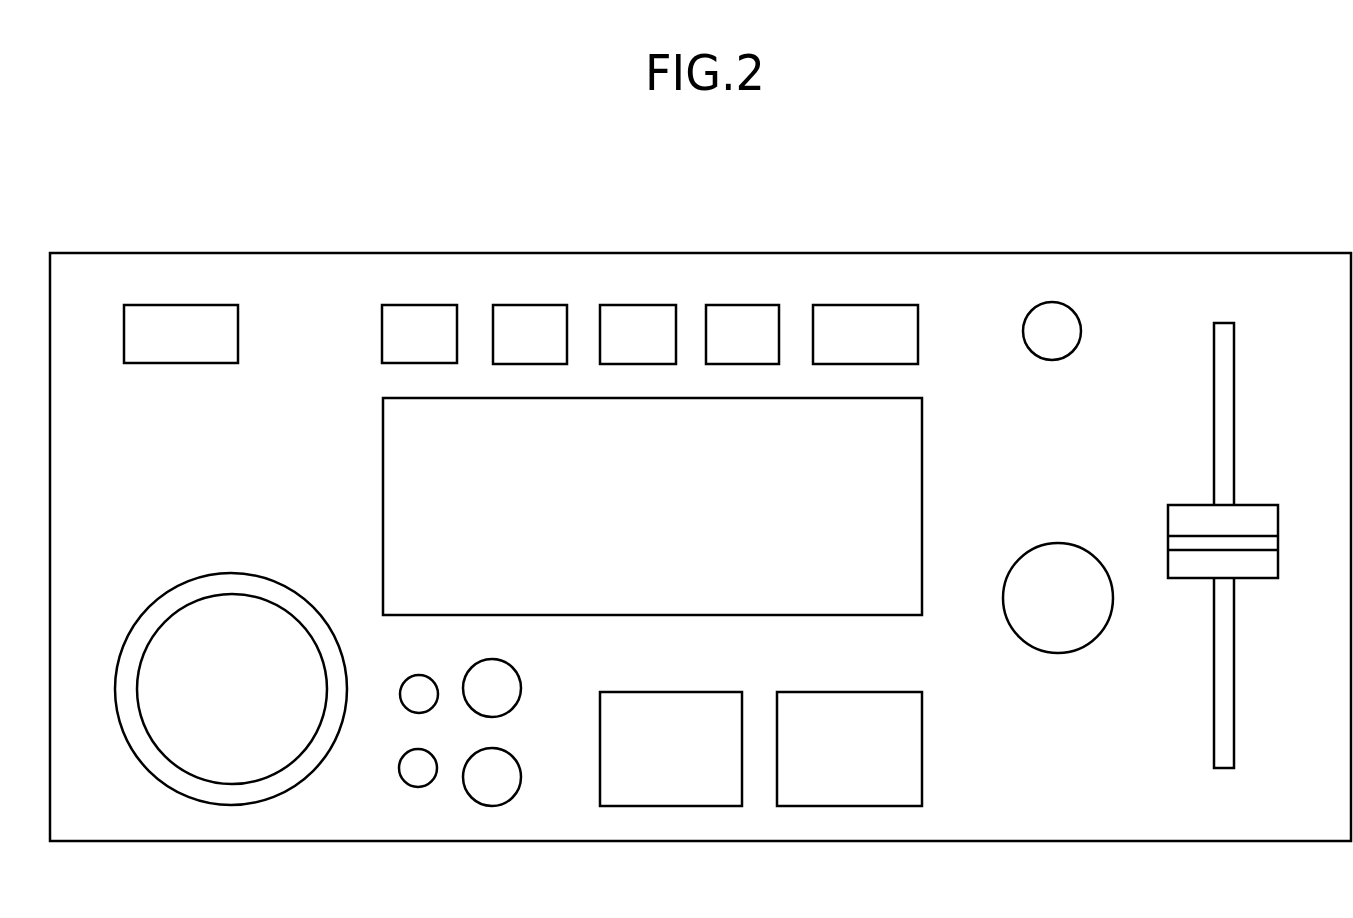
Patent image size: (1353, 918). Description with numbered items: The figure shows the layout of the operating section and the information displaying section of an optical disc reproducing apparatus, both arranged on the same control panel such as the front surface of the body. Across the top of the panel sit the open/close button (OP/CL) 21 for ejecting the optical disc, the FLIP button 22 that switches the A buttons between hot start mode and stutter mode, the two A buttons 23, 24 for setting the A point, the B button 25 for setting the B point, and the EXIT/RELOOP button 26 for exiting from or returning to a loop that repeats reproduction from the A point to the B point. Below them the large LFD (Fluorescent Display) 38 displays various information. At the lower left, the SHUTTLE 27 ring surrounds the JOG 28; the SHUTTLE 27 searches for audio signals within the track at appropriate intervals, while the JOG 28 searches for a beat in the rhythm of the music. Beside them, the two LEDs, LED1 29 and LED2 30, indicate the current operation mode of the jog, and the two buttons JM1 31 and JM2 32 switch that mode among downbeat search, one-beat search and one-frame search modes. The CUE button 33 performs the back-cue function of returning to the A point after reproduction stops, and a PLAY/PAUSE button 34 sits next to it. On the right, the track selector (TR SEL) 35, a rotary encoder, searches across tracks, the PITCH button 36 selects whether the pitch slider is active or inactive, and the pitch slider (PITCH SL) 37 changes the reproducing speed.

The open/close button (OP/CL) 21 is at (182, 305).
The FLIP button 22 is at (420, 305).
The A button 23 is at (530, 305).
The A button 24 is at (637, 305).
The B button 25 is at (743, 305).
The EXIT/RELOOP button 26 is at (868, 305).
The SHUTTLE 27 is at (155, 605).
The JOG 28 is at (162, 758).
The LED1 29 is at (400, 690).
The LED2 30 is at (400, 777).
The JM1 button 31 is at (521, 680).
The JM2 button 32 is at (521, 785).
The CUE button 33 is at (672, 692).
The play/pause button 34 is at (855, 692).
The track selector (TR SEL) 35 is at (1065, 654).
The PITCH button 36 is at (1073, 351).
The pitch slider (PITCH SL) 37 is at (1255, 505).
The LFD (Fluorescent Display) 38 is at (922, 432).